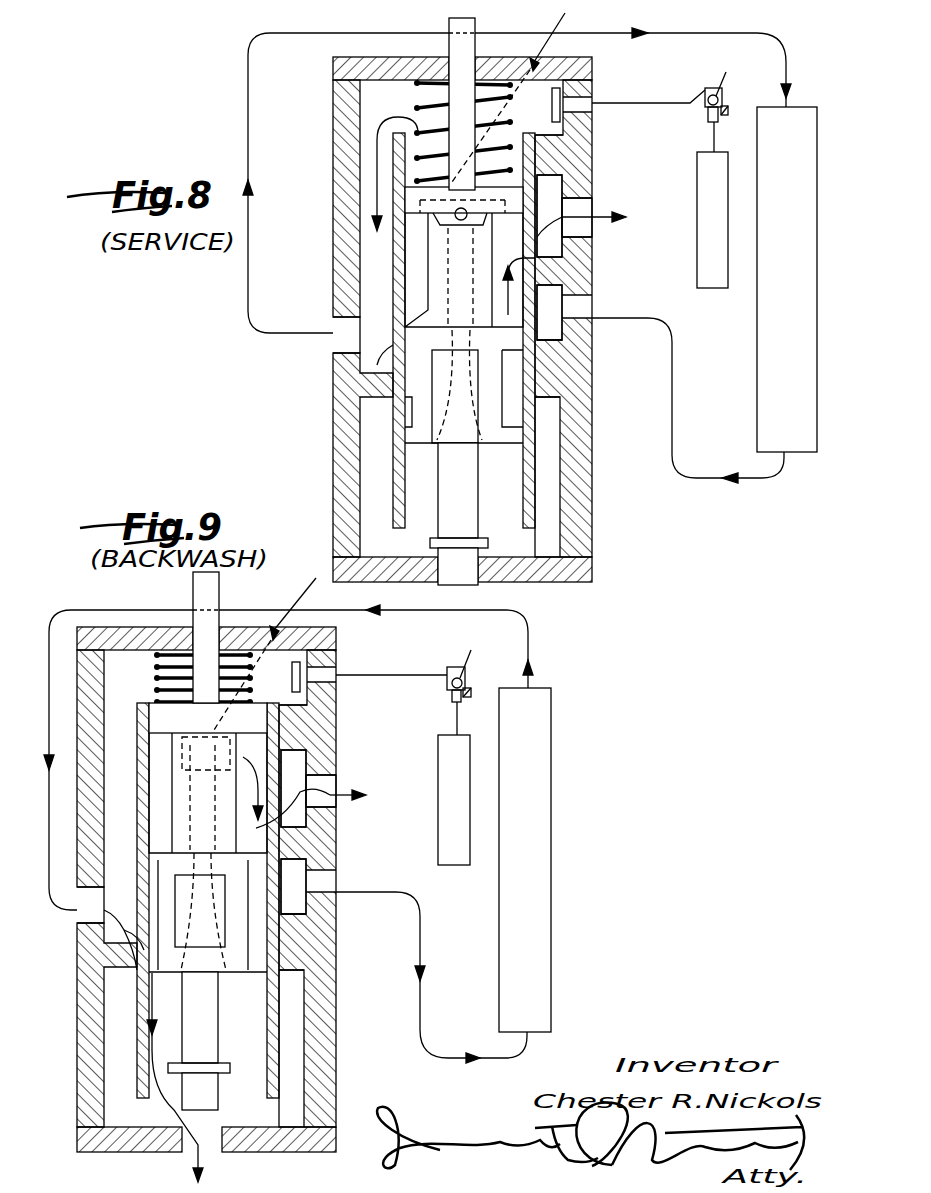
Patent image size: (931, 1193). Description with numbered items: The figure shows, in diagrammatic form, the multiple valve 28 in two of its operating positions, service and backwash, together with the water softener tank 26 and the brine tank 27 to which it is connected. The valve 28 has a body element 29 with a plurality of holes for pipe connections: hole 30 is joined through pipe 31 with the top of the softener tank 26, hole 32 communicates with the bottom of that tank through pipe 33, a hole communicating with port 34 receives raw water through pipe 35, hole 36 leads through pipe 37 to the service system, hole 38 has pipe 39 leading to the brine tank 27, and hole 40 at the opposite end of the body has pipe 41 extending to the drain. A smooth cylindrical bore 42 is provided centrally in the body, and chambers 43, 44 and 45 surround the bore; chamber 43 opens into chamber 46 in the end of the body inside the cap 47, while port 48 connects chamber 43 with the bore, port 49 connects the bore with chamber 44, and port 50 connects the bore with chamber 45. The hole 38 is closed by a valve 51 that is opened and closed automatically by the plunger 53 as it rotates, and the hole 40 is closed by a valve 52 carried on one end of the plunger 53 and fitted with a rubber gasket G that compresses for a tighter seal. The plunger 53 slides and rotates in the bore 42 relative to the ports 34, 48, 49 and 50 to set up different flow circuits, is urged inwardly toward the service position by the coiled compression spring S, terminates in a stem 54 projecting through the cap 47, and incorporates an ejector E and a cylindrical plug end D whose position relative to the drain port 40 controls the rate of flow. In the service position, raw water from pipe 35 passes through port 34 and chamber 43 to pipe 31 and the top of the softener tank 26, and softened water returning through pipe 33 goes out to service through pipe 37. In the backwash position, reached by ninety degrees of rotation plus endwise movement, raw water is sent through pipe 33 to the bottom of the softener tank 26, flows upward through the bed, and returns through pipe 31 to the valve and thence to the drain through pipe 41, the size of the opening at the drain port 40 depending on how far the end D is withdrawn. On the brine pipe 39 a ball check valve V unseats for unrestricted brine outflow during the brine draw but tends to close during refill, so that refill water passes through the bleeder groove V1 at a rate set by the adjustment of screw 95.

In FIG. 8, the water softener tank 26 is at (757, 328).
In FIG. 9, the water softener tank 26 is at (504, 860).
In FIG. 8, the brine tank 27 is at (697, 272).
In FIG. 9, the brine tank 27 is at (433, 800).
In FIG. 8, the multiple valve 28 is at (328, 436).
In FIG. 9, the multiple valve 28 is at (85, 888).
In FIG. 8, the body element 29 is at (592, 413).
In FIG. 9, the body element 29 is at (325, 888).
In FIG. 8, the hole 30 is at (336, 352).
In FIG. 9, the hole 30 is at (70, 911).
In FIG. 8, the pipe 31 is at (251, 213).
In FIG. 9, the pipe 31 is at (288, 757).
In FIG. 8, the hole 32 is at (592, 310).
In FIG. 9, the hole 32 is at (380, 948).
In FIG. 8, the pipe 33 is at (698, 477).
In FIG. 9, the pipe 33 is at (473, 1036).
In FIG. 8, the port 34 is at (464, 313).
In FIG. 9, the port 34 is at (206, 836).
In FIG. 8, the pipe 35 is at (525, 94).
In FIG. 9, the pipe 35 is at (265, 650).
In FIG. 8, the hole 36 is at (600, 215).
In FIG. 9, the hole 36 is at (340, 790).
In FIG. 8, the pipe 37 is at (597, 228).
In FIG. 9, the pipe 37 is at (356, 811).
In FIG. 8, the hole 38 is at (594, 100).
In FIG. 9, the hole 38 is at (391, 688).
In FIG. 8, the pipe 39 is at (712, 134).
In FIG. 9, the pipe 39 is at (434, 718).
In FIG. 8, the hole 40 is at (488, 582).
In FIG. 9, the hole 40 is at (206, 1151).
In FIG. 9, the pipe 41 is at (175, 1077).
In FIG. 8, the cylindrical bore 42 is at (393, 496).
In FIG. 9, the cylindrical bore 42 is at (125, 900).
In FIG. 8, the chamber 43 is at (360, 250).
In FIG. 9, the chamber 43 is at (86, 941).
In FIG. 8, the chamber 44 is at (560, 345).
In FIG. 9, the chamber 44 is at (326, 942).
In FIG. 8, the chamber 45 is at (555, 187).
In FIG. 9, the chamber 45 is at (328, 786).
In FIG. 8, the chamber 46 is at (563, 133).
In FIG. 9, the chamber 46 is at (324, 715).
In FIG. 8, the cap 47 is at (592, 70).
In FIG. 9, the cap 47 is at (225, 639).
In FIG. 8, the port 48 is at (377, 353).
In FIG. 9, the port 48 is at (124, 967).
In FIG. 8, the port 49 is at (523, 331).
In FIG. 9, the port 49 is at (329, 888).
In FIG. 8, the port 50 is at (533, 240).
In FIG. 9, the port 50 is at (306, 808).
In FIG. 8, the valve 51 is at (552, 112).
In FIG. 9, the valve 51 is at (282, 680).
In FIG. 8, the valve 52 is at (430, 547).
In FIG. 9, the valve 52 is at (212, 1054).
In FIG. 8, the plunger 53 is at (478, 474).
In FIG. 9, the plunger 53 is at (219, 1017).
In FIG. 8, the stem 54 is at (476, 22).
In FIG. 9, the stem 54 is at (229, 637).
In FIG. 8, the screw 95 is at (739, 120).
In FIG. 9, the screw 95 is at (479, 705).
In FIG. 8, the coiled compression spring S is at (413, 108).
In FIG. 9, the coiled compression spring S is at (189, 678).
In FIG. 8, the ejector E is at (440, 384).
In FIG. 9, the ejector E is at (186, 914).
In FIG. 8, the rubber gasket G is at (488, 545).
In FIG. 9, the rubber gasket G is at (238, 1082).
In FIG. 8, the plug end D is at (458, 578).
In FIG. 9, the plug end D is at (225, 1097).
In FIG. 8, the ball check valve V is at (720, 75).
In FIG. 9, the ball check valve V is at (464, 668).
In FIG. 8, the bleeder groove V1 is at (708, 116).
In FIG. 9, the bleeder groove V1 is at (440, 700).